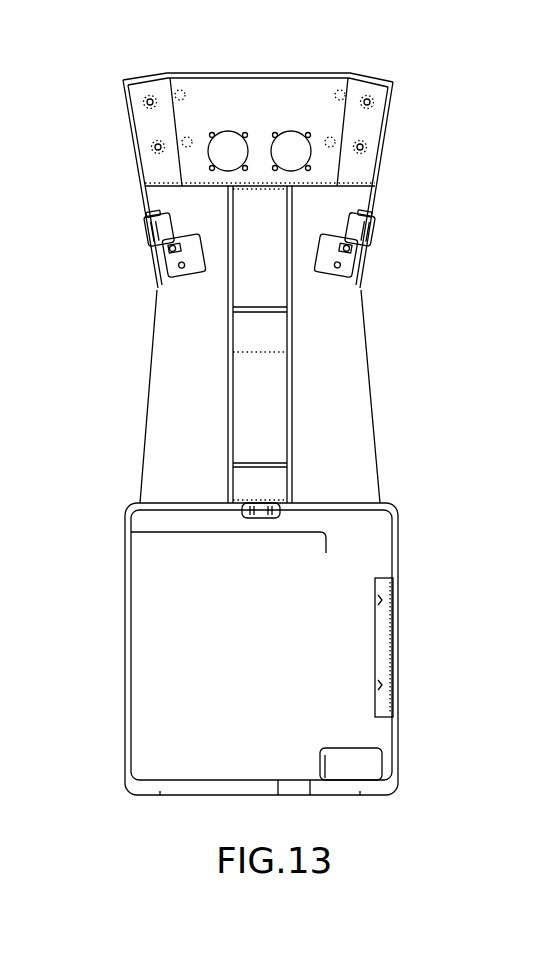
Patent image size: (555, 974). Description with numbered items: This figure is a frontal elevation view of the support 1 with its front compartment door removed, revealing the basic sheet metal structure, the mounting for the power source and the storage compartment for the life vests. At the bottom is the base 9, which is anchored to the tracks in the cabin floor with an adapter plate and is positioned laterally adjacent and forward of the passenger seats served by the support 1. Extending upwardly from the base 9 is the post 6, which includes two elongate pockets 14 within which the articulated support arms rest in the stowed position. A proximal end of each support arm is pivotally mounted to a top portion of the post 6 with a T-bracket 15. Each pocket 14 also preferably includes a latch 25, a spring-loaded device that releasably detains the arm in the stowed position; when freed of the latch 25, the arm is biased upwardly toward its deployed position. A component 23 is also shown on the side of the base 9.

The support 1 is at (402, 64).
The post 6 is at (368, 338).
The base 9 is at (395, 573).
The elongate pocket 14 is at (199, 426).
The T-bracket 15 is at (125, 497).
The side bracket 23 is at (373, 652).
The latch 25 is at (147, 229).